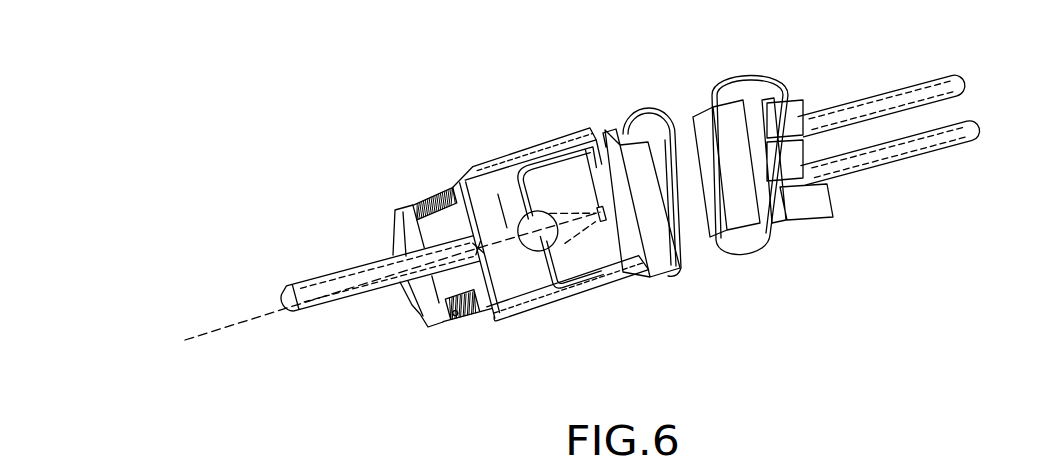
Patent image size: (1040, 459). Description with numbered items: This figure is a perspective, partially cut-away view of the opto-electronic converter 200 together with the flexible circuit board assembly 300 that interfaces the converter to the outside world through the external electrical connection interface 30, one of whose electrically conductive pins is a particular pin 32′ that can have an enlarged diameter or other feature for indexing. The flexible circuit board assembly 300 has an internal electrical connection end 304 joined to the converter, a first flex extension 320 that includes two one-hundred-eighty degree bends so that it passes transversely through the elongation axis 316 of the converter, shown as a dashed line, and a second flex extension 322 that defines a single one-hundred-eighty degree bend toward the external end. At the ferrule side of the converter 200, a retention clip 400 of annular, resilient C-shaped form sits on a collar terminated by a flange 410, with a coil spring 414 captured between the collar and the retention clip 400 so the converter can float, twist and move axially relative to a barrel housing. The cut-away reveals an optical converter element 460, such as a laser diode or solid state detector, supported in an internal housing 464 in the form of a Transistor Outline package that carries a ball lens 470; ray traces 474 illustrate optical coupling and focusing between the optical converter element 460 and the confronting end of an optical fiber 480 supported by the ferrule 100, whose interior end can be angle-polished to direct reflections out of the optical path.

The external electrical connection interface 30 is at (904, 89).
The pin 32′ is at (933, 152).
The ferrule 100 is at (317, 280).
The opto-electronic converter 200 is at (573, 131).
The flexible circuit board assembly 300 is at (660, 293).
The internal electrical connection end 304 is at (682, 258).
The elongation axis 316 is at (210, 328).
The first flex extension 320 is at (653, 115).
The second flex extension 322 is at (768, 80).
The retention clip 400 is at (443, 190).
The flange 410 is at (400, 210).
The coil spring 414 is at (465, 320).
The optical converter element 460 is at (604, 212).
The internal housing 464 is at (560, 288).
The lens 470 is at (520, 236).
The ray traces 474 is at (508, 230).
The optical fiber 480 is at (310, 302).